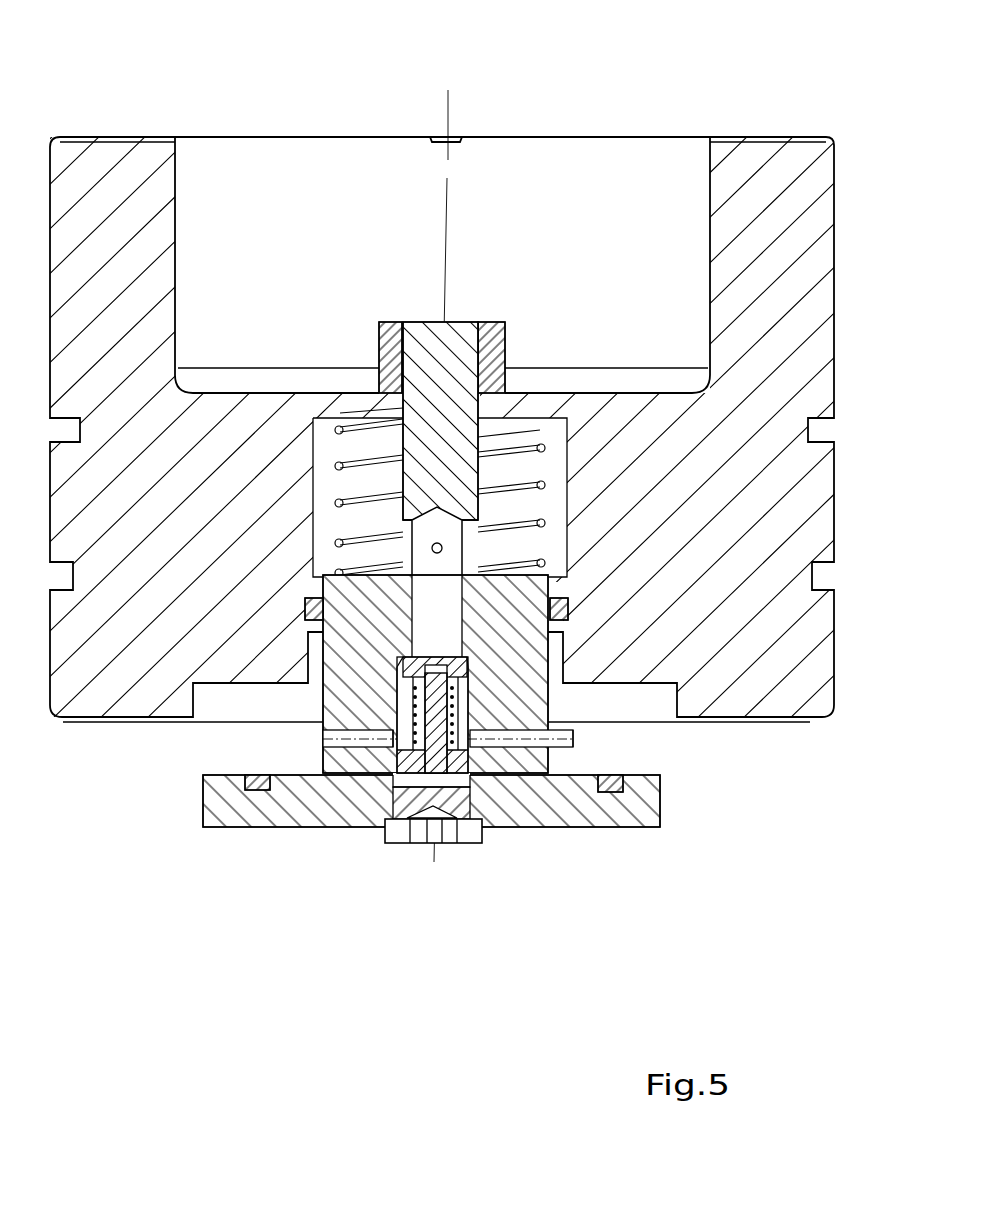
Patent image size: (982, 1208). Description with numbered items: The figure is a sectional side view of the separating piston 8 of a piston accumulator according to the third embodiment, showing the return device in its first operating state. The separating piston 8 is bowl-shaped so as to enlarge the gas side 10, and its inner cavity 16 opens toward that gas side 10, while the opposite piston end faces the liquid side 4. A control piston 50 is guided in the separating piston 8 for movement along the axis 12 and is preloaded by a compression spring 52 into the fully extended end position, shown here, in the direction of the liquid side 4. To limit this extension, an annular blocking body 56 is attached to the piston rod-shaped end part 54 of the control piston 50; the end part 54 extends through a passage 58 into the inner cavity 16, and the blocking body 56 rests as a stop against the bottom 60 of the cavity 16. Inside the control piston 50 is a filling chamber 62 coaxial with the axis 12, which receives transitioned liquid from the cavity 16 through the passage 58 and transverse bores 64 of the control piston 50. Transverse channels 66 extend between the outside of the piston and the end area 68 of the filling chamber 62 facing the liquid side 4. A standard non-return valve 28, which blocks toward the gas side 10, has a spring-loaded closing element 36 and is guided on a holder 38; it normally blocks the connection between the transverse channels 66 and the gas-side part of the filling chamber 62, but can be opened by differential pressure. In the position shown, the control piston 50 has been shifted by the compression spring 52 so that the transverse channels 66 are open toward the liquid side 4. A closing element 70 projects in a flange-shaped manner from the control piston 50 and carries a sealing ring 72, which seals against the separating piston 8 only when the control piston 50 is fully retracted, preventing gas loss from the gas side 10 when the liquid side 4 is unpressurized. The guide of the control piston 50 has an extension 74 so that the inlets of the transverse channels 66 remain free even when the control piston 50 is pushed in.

The liquid side 4 is at (790, 722).
The separating piston 8 is at (755, 497).
The gas side 10 is at (735, 137).
The cylinder axis 12 is at (450, 110).
The inner cavity 16 is at (264, 184).
The non-return valve 28 is at (462, 706).
The closing element 36 is at (430, 660).
The holder 38 is at (395, 800).
The control piston 50 is at (367, 642).
The compression spring 52 is at (637, 393).
The end part 54 is at (455, 345).
The blocking body 56 is at (388, 330).
The passage 58 is at (510, 447).
The bottom 60 is at (657, 368).
The filling chamber 62 is at (307, 612).
The transverse bores 64 is at (482, 533).
The transverse channels 66 is at (355, 748).
The end area 68 is at (402, 700).
The closing element 70 is at (612, 795).
The sealing ring 72 is at (246, 792).
The extension 74 is at (558, 657).